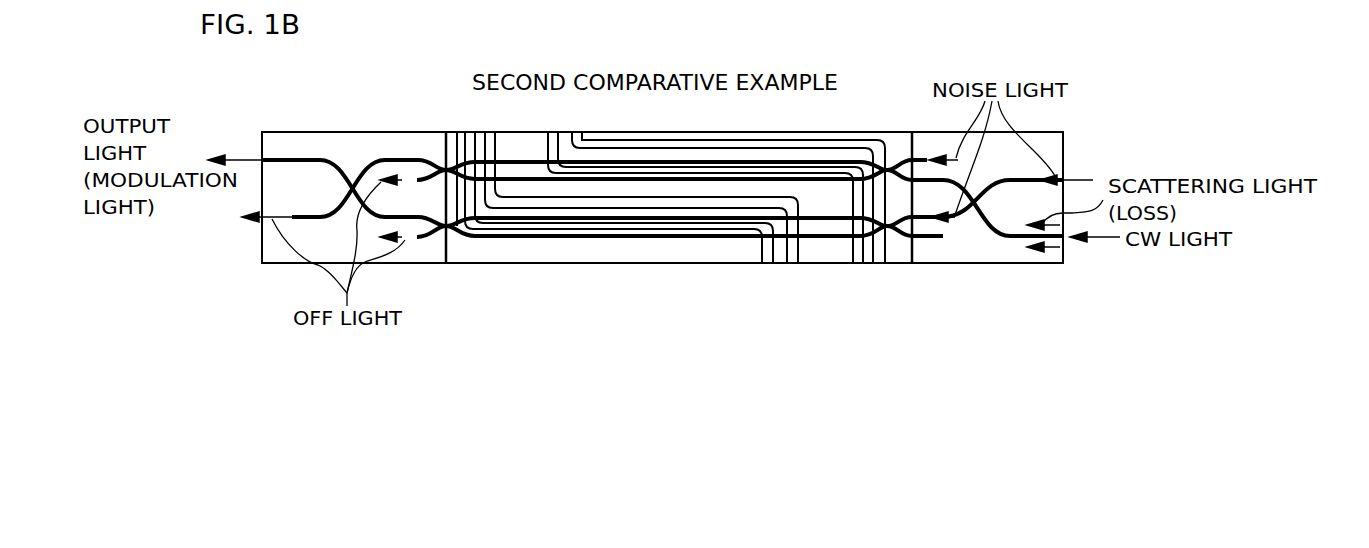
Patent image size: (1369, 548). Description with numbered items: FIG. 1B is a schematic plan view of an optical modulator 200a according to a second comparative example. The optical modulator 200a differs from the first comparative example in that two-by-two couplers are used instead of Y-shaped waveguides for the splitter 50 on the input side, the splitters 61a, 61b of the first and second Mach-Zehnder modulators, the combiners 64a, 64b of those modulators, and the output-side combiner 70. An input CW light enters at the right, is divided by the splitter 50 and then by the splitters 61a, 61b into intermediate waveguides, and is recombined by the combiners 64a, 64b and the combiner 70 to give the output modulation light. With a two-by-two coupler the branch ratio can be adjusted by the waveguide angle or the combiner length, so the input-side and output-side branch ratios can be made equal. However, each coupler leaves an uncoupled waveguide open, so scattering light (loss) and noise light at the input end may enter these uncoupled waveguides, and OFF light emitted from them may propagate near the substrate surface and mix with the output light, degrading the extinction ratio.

The optical modulator 200a is at (1118, 73).
The combiner 70 is at (343, 156).
The combiner 64a is at (433, 162).
The combiner 64b is at (432, 240).
The splitter 61a is at (900, 170).
The splitter 61b is at (900, 240).
The splitter 50 is at (985, 228).